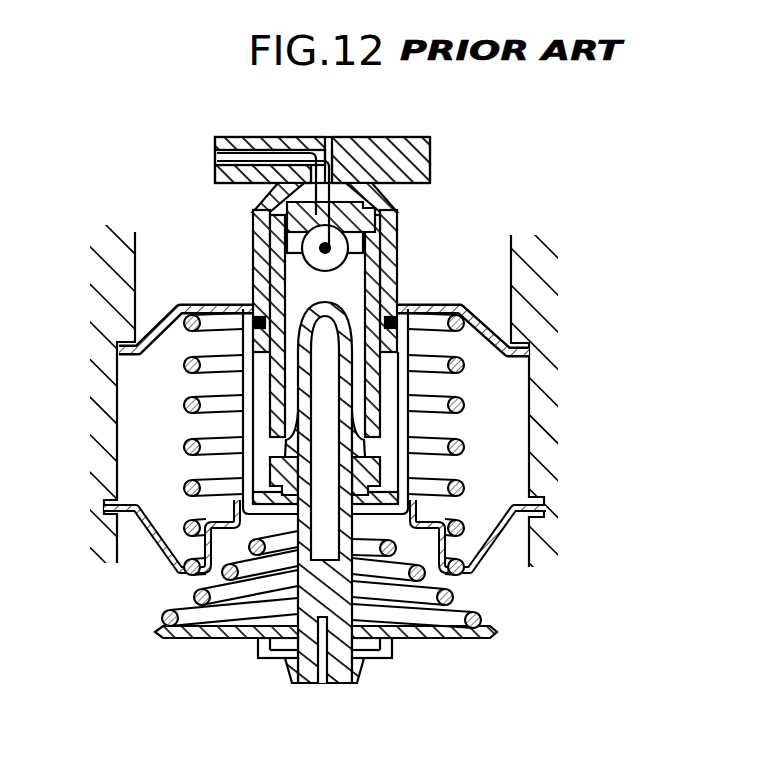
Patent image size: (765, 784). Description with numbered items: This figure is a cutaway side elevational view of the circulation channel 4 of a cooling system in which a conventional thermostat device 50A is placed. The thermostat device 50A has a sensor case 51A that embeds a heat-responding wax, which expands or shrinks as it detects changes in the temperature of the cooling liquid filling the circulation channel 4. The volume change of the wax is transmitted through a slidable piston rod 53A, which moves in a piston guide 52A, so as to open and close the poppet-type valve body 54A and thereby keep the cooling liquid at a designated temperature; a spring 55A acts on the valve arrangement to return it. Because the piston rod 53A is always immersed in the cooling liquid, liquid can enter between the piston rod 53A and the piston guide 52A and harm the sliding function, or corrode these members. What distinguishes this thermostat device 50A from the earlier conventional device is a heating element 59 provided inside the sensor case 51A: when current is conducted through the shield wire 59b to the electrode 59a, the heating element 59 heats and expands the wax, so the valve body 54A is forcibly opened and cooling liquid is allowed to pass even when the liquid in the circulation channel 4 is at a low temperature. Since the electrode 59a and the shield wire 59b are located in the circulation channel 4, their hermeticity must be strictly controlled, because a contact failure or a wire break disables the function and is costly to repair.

The circulation channel 4 is at (157, 266).
The thermostat device 50A is at (436, 656).
The sensor case 51A is at (387, 272).
The piston guide 52A is at (352, 679).
The piston rod 53A is at (321, 552).
The valve body 54A is at (513, 305).
The spring 55A is at (465, 449).
The heating element 59 is at (268, 240).
The electrode 59a is at (286, 275).
The shield wire 59b is at (329, 137).